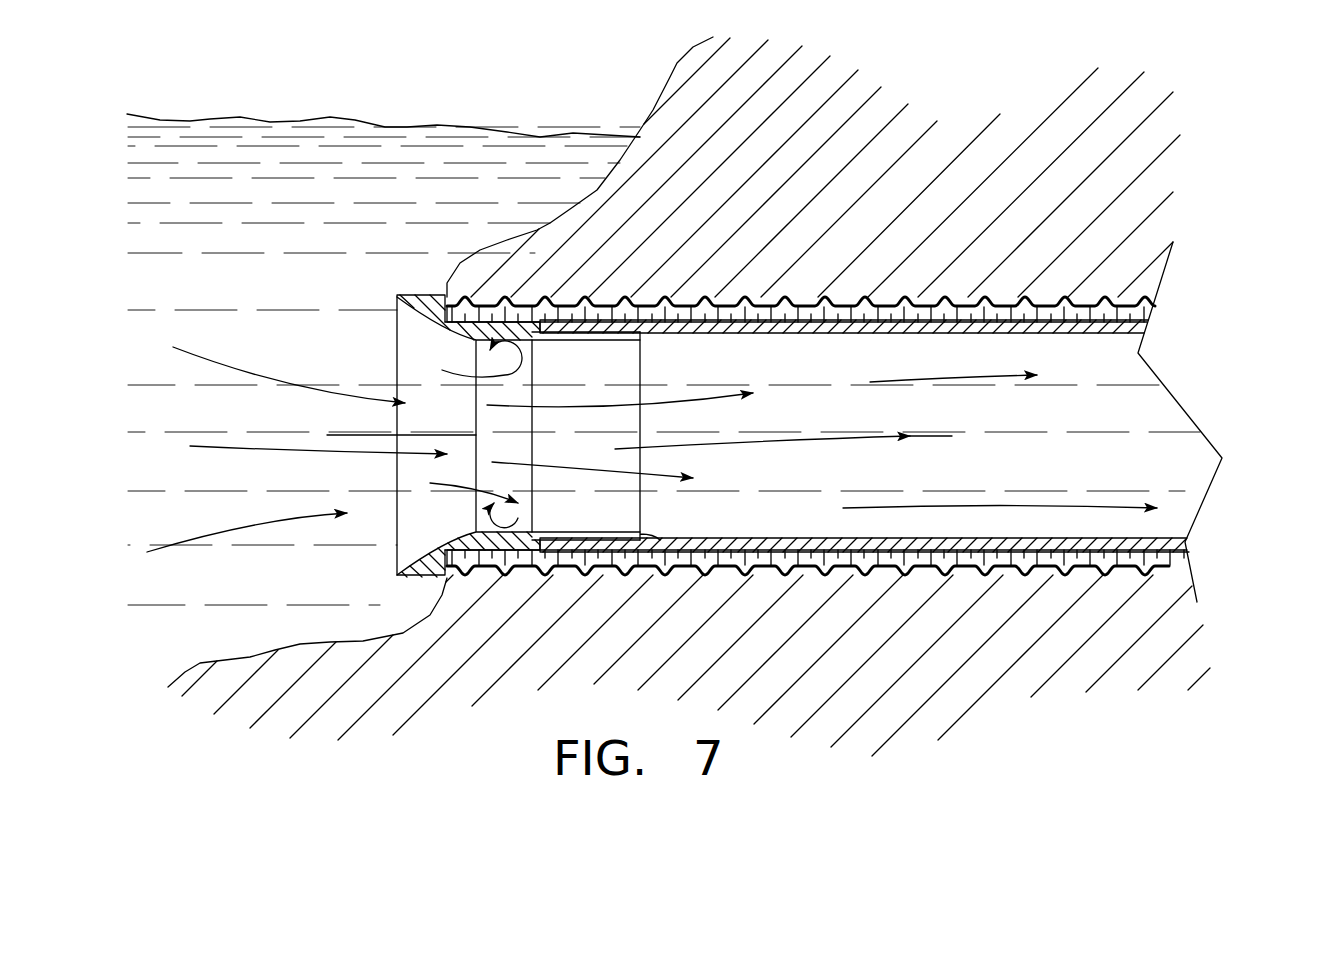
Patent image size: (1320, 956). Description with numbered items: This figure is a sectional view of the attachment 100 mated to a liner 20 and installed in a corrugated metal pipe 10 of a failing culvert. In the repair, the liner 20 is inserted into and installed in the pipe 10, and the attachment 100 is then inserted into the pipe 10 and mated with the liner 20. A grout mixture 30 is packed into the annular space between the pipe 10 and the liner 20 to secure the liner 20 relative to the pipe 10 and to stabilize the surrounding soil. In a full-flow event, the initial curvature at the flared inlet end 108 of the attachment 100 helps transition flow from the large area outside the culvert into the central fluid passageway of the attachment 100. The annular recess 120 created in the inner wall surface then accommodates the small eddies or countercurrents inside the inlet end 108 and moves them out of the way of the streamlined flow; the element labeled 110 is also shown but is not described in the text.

The corrugated metal pipe 10 is at (1147, 294).
The liner 20 is at (1147, 320).
The grout mixture 30 is at (1187, 562).
The attachment 100 is at (408, 293).
The inlet end 108 is at (397, 577).
The outlet end 110 is at (660, 540).
The annular recess 120 is at (533, 330).